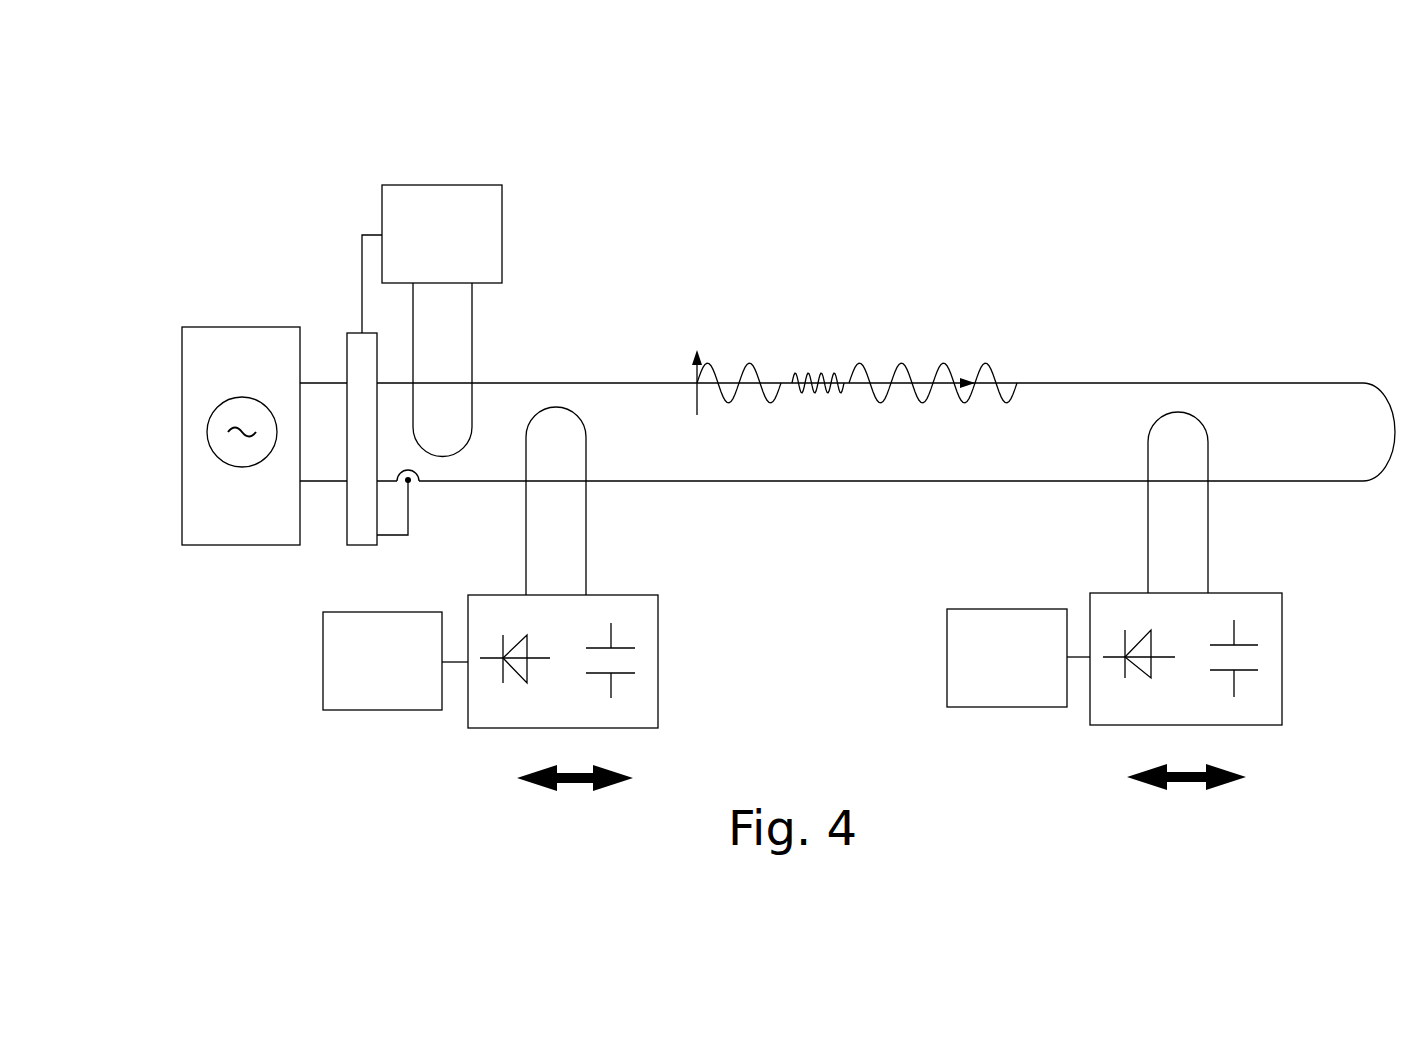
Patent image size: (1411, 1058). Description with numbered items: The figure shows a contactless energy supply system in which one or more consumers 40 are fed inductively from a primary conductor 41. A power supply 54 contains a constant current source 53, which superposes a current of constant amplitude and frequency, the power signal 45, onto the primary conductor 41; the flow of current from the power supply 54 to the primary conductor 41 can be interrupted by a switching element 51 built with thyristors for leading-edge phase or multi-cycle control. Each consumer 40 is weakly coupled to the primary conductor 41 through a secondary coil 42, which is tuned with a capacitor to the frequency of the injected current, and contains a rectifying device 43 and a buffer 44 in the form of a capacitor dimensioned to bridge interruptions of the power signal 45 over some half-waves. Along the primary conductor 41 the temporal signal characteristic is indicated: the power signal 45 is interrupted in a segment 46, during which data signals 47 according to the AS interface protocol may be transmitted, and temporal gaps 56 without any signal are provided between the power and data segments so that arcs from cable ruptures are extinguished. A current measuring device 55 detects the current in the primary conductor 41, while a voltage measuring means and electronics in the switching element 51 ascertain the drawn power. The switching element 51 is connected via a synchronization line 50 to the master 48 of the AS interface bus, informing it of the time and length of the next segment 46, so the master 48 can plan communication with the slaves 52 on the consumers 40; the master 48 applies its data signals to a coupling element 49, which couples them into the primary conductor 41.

The consumer 40 is at (632, 710).
The primary conductor 41 is at (1078, 382).
The secondary coil 42 is at (560, 407).
The rectifying device 43 is at (508, 690).
The buffer 44 is at (620, 637).
The power signal 45 is at (725, 355).
The segment 46 is at (817, 363).
The data signal 47 is at (820, 400).
The master 48 is at (475, 237).
The coupling element 49 is at (472, 430).
The synchronization line 50 is at (360, 268).
The switching element 51 is at (360, 520).
The slave 52 is at (350, 672).
The constant current source 53 is at (237, 450).
The power supply 54 is at (222, 513).
The current measuring device 55 is at (418, 493).
The temporal gap 56 is at (784, 392).